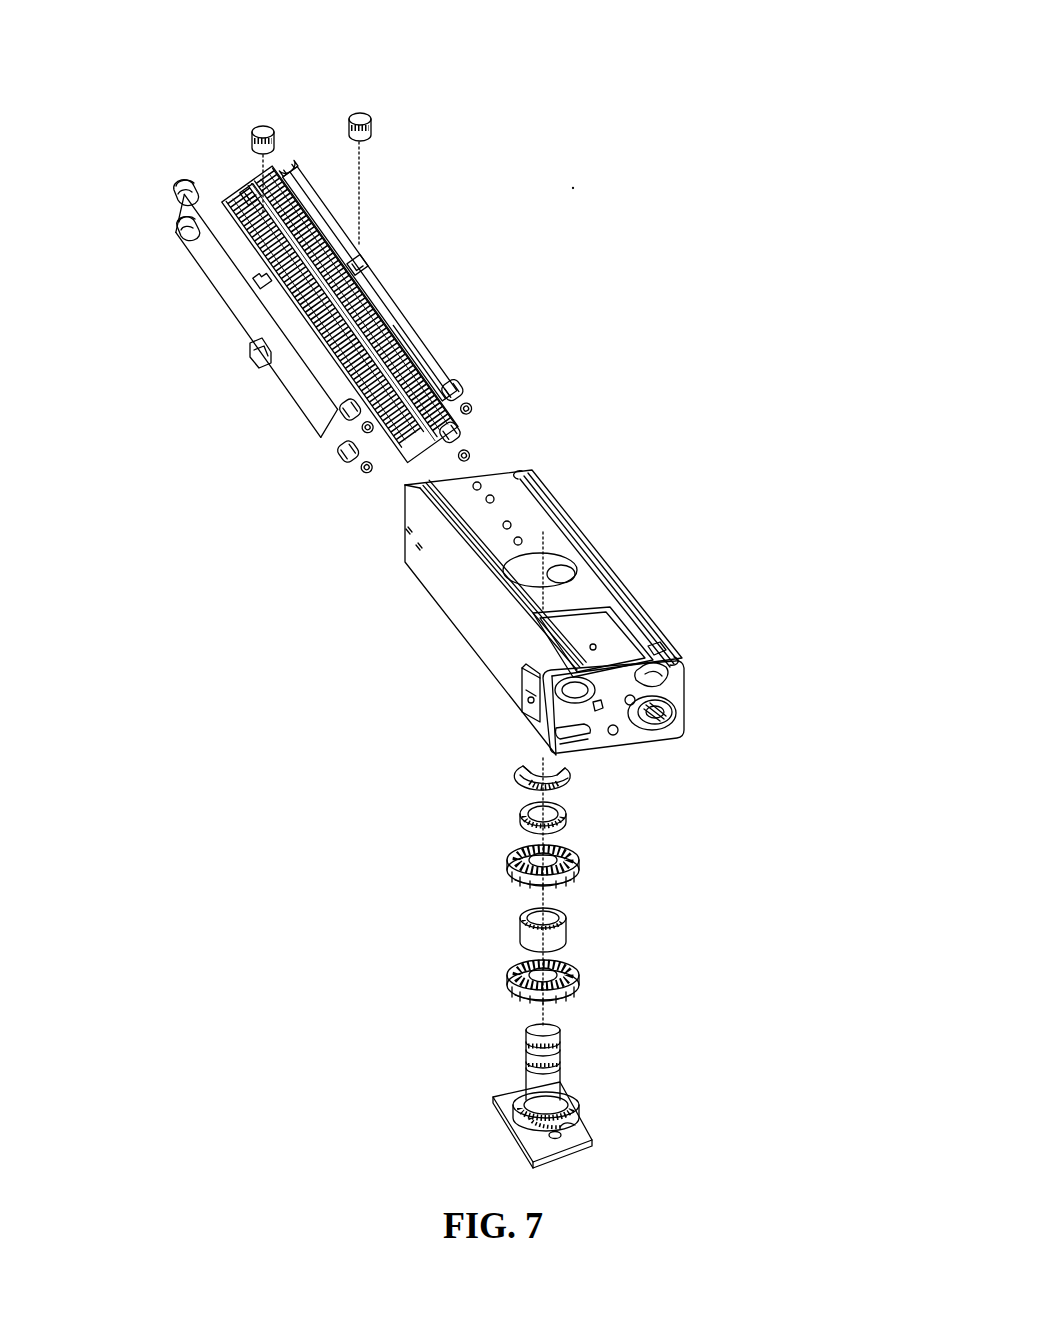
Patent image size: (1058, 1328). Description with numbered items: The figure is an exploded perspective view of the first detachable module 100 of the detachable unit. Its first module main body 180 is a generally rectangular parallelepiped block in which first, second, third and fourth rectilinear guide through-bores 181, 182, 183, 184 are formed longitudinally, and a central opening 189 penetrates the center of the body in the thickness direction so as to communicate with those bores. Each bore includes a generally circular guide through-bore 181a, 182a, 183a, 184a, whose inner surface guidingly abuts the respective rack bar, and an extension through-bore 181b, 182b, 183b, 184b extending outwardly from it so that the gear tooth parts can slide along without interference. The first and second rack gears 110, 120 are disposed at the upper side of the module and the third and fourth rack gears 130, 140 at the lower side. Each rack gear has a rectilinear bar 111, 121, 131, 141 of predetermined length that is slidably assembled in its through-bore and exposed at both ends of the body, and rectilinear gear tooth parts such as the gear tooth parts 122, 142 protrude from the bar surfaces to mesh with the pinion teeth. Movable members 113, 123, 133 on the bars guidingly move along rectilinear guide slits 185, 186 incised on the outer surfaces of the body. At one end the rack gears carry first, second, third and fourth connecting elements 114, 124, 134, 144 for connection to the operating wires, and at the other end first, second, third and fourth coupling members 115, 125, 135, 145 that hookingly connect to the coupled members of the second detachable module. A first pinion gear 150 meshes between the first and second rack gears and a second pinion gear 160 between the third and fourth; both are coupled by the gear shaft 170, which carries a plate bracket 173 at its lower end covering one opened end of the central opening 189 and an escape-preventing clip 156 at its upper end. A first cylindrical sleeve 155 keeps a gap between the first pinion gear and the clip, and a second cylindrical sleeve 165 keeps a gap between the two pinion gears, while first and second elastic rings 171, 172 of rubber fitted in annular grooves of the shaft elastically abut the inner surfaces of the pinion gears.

The first detachable module 100 is at (573, 188).
The first rack gear 110 is at (175, 205).
The rectilinear bar 111 is at (220, 224).
The movable member 113 is at (262, 120).
The first connecting element 114 is at (185, 176).
The first coupling member 115 is at (350, 415).
The second rack gear 120 is at (407, 307).
The rectilinear bar 121 is at (357, 265).
The rectilinear gear tooth part 122 is at (368, 285).
The movable member 123 is at (367, 113).
The second connecting element 124 is at (288, 168).
The second coupling member 125 is at (465, 408).
The third rack gear 130 is at (240, 320).
The rectilinear bar 131 is at (207, 282).
The movable member 133 is at (265, 372).
The third connecting element 134 is at (176, 230).
The third coupling member 135 is at (360, 475).
The fourth rack gear 140 is at (433, 425).
The rectilinear bar 141 is at (452, 390).
The rectilinear gear tooth part 142 is at (324, 317).
The fourth connecting element 144 is at (251, 195).
The fourth coupling member 145 is at (456, 442).
The first pinion gear 150 is at (505, 868).
The first cylindrical sleeve 155 is at (525, 823).
The escape-preventing clip 156 is at (520, 780).
The second pinion gear 160 is at (505, 985).
The second cylindrical sleeve 165 is at (522, 932).
The gear shaft 170 is at (525, 1062).
The first elastic ring 171 is at (565, 1065).
The second elastic ring 172 is at (575, 1100).
The plate bracket 173 is at (590, 1145).
The first module main body 180 is at (447, 590).
The first rectilinear guide through-bore 181 is at (750, 798).
The guide through-bore 181a is at (595, 712).
The extension through-bore 181b is at (605, 703).
The second rectilinear guide through-bore 182 is at (790, 650).
The guide through-bore 182a is at (657, 677).
The extension through-bore 182b is at (657, 643).
The third rectilinear guide through-bore 183 is at (745, 868).
The guide through-bore 183a is at (565, 748).
The extension through-bore 183b is at (575, 738).
The fourth rectilinear guide through-bore 184 is at (805, 716).
The guide through-bore 184a is at (677, 727).
The extension through-bore 184b is at (673, 710).
The rectilinear guide slit 185 is at (497, 628).
The rectilinear guide slit 186 is at (560, 490).
The central opening 189 is at (575, 570).